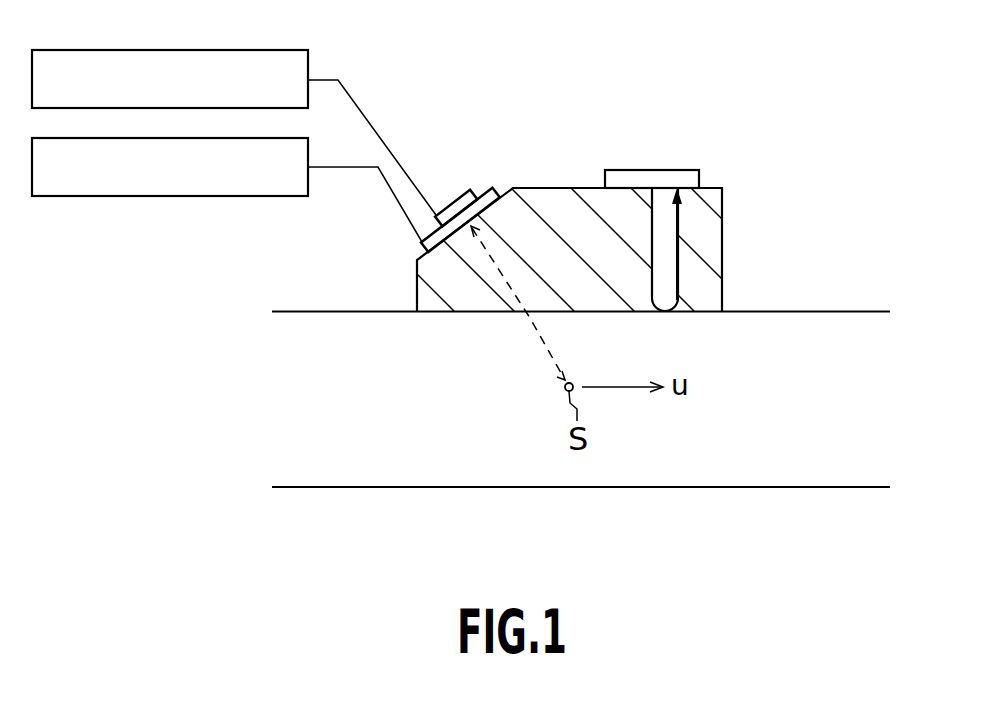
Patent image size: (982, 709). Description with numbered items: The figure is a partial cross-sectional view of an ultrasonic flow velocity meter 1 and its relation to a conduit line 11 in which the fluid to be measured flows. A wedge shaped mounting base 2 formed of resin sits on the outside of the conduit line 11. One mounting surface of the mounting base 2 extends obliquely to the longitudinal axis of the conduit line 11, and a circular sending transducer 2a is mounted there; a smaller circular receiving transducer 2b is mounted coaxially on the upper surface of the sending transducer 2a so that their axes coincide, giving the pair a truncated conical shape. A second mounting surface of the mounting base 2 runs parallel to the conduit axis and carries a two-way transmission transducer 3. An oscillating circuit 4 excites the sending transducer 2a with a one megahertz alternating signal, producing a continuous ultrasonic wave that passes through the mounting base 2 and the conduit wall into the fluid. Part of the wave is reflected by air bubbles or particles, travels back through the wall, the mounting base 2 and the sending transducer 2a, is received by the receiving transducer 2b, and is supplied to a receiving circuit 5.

The ultrasonic flow velocity meter 1 is at (575, 196).
The mounting base 2 is at (710, 250).
The sending transducer 2a is at (421, 237).
The receiving transducer 2b is at (458, 198).
The two-way transmission transducer 3 is at (654, 168).
The oscillating circuit 4 is at (225, 197).
The receiving circuit 5 is at (279, 50).
The conduit line 11 is at (835, 311).